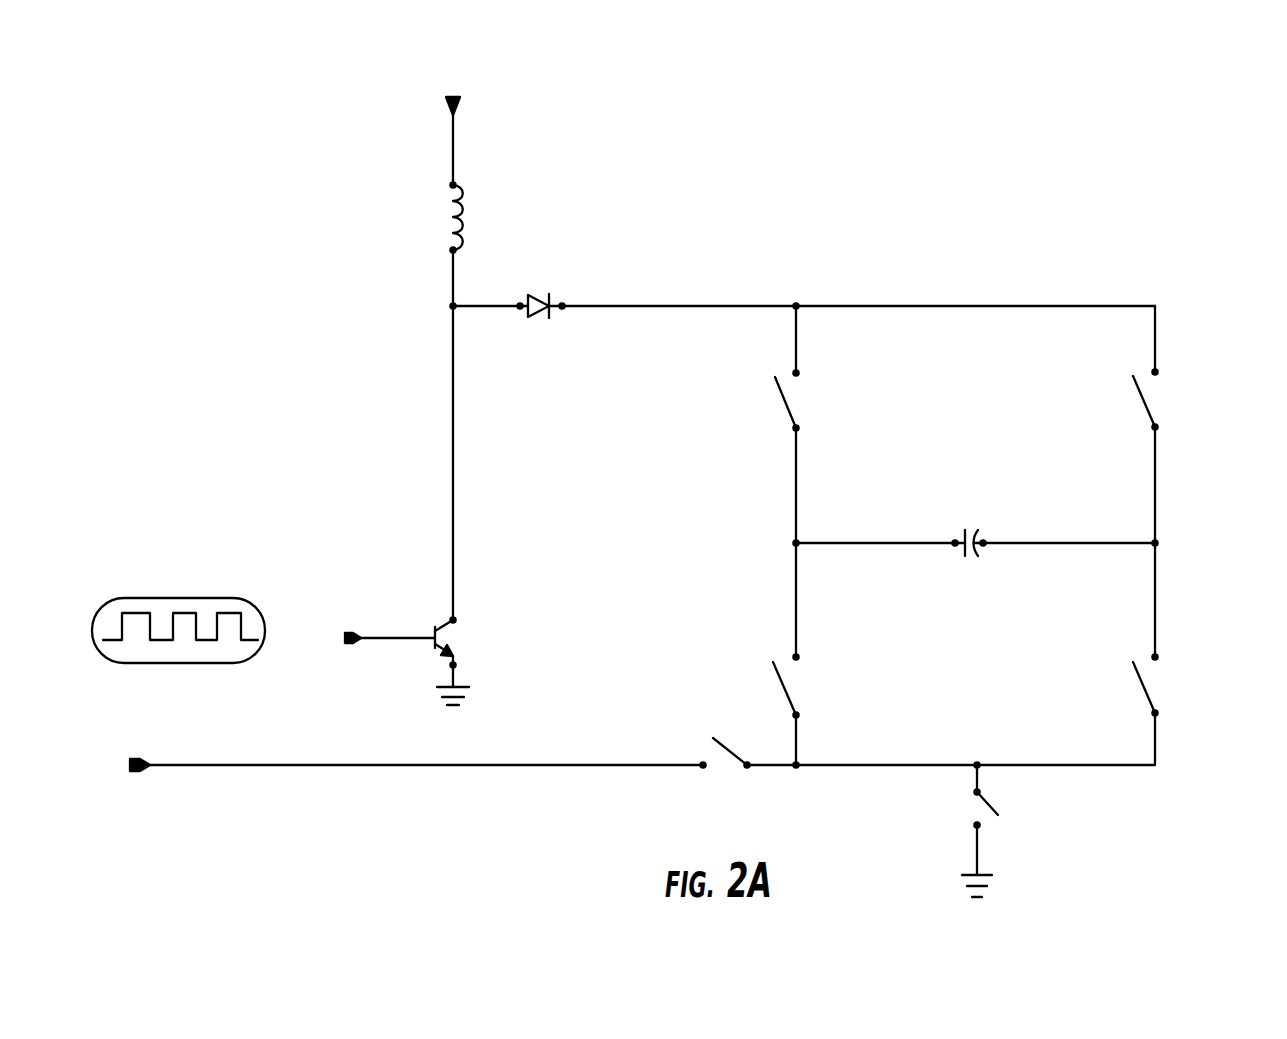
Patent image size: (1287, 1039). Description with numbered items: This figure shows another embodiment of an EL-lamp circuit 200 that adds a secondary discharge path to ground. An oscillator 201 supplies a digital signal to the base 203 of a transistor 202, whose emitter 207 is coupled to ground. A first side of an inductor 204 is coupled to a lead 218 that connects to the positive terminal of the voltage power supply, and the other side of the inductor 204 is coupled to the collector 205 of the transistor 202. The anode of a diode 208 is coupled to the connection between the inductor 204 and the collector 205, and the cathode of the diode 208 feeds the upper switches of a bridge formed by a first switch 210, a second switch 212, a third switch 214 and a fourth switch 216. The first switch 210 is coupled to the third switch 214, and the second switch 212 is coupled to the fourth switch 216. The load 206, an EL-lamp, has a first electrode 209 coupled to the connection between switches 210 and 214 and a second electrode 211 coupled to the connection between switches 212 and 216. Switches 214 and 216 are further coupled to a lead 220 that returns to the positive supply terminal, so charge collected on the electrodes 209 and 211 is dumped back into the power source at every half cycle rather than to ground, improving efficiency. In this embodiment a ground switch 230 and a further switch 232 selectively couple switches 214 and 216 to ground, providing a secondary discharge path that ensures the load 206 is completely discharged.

The EL-lamp circuit 200 is at (1131, 272).
The oscillator 201 is at (235, 598).
The transistor 202 is at (505, 617).
The base 203 is at (432, 630).
The inductor 204 is at (464, 223).
The collector 205 is at (457, 622).
The load 206 is at (970, 560).
The emitter 207 is at (432, 655).
The diode 208 is at (535, 322).
The first electrode 209 is at (958, 552).
The switch S1 210 is at (808, 375).
The second electrode 211 is at (985, 552).
The switch S2 212 is at (1167, 372).
The switch S3 214 is at (806, 655).
The switch S4 216 is at (1160, 663).
The lead 218 is at (465, 103).
The lead 220 is at (137, 778).
The switch 230 is at (1005, 815).
The switch 232 is at (735, 742).